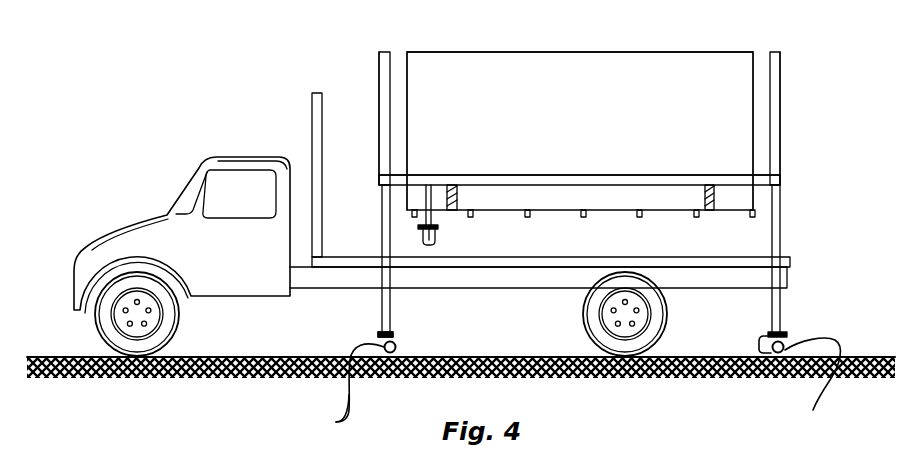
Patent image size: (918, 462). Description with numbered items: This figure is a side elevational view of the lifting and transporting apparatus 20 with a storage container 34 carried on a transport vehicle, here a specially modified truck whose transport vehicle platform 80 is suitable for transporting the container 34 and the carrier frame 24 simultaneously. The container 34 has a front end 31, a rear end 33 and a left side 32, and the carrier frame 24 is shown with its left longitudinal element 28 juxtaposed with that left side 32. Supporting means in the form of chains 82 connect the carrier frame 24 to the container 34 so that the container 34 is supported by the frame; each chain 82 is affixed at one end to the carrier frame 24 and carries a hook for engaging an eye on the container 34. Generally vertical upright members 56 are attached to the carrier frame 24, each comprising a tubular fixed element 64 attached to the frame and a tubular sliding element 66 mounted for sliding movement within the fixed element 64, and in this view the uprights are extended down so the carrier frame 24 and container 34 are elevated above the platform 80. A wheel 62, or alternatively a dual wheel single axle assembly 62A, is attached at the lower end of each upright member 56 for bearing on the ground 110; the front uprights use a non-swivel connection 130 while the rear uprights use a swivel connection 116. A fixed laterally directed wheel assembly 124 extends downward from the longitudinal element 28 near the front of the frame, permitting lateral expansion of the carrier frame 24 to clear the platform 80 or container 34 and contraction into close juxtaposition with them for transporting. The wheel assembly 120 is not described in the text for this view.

The apparatus for lifting and transporting a container 20 is at (170, 108).
The carrier frame 24 is at (635, 175).
The left longitudinal element 28 is at (542, 175).
The front end 31 is at (407, 60).
The left side 32 is at (630, 67).
The rear end 33 is at (753, 60).
The container 34 is at (538, 50).
The upright member 56 is at (379, 85).
The tubular fixed element 64 is at (376, 140).
The tubular sliding element 66 is at (392, 300).
The transport vehicle platform 80 is at (623, 257).
The chain 82 is at (705, 196).
The ground 110 is at (757, 352).
The swivel connection 116 is at (378, 332).
The non-swivel connection 130 is at (385, 334).
The eyelet ring 120 is at (397, 345).
The fixed laterally directed wheel assembly 124 is at (440, 230).
The wheel 62 is at (543, 388).
The dual wheel single axle assembly 62A is at (342, 408).